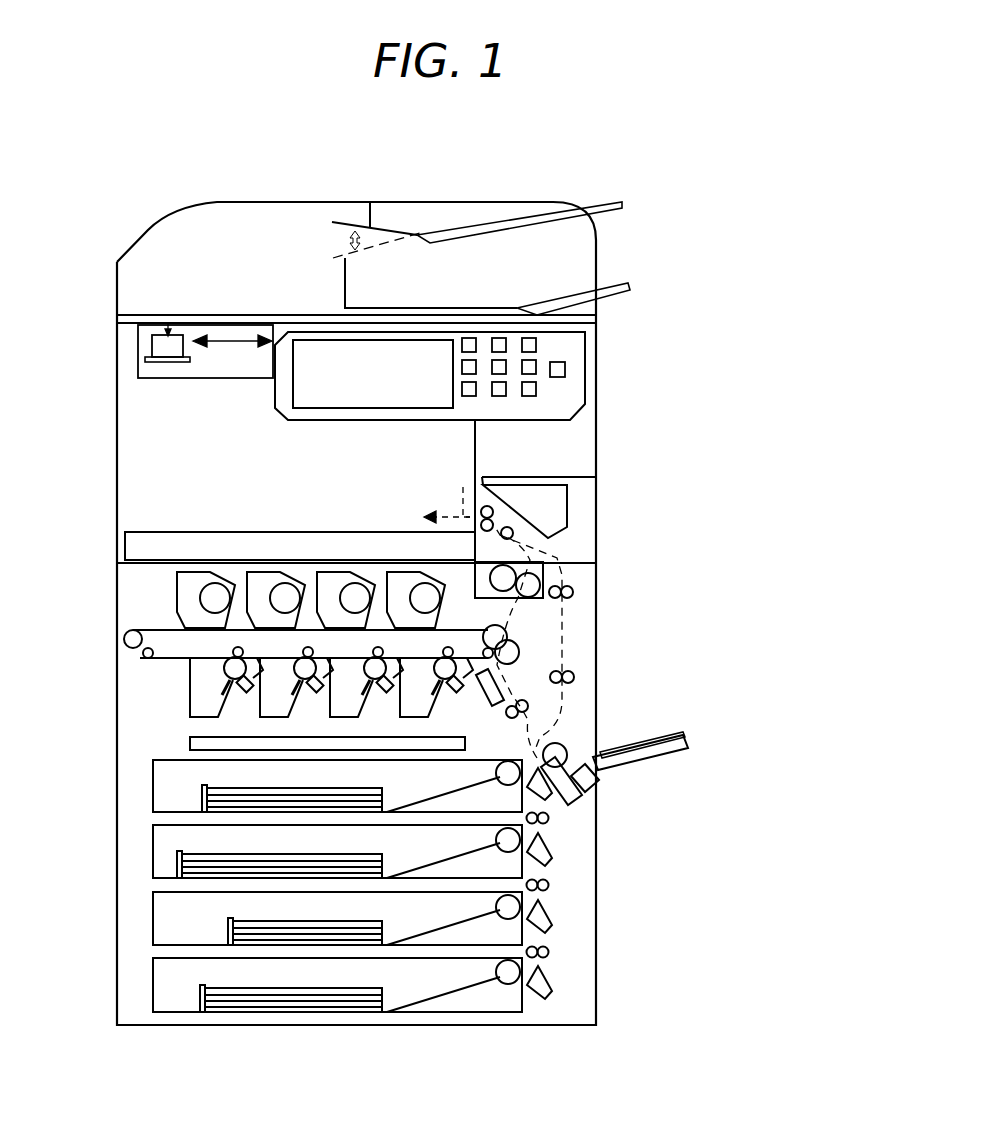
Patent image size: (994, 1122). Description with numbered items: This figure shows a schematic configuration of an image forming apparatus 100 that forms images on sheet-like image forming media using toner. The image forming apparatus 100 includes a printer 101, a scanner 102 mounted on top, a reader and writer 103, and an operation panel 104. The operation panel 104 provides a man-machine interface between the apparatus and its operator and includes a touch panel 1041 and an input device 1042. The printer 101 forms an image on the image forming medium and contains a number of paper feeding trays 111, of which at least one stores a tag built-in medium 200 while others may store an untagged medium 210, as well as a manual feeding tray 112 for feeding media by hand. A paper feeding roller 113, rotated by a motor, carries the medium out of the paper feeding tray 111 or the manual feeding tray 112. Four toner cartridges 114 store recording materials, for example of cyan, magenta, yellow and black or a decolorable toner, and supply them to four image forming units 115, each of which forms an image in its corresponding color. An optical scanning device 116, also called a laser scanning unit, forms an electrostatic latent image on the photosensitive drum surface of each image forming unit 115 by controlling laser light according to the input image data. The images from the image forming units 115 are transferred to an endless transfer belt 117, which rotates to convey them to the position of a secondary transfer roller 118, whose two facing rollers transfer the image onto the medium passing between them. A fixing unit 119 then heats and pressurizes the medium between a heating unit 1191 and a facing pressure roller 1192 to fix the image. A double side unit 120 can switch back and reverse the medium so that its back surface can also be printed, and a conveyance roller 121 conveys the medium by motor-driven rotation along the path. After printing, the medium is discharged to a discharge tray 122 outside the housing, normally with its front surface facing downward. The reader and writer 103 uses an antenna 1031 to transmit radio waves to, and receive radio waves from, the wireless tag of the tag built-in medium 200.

The image forming apparatus 100 is at (622, 163).
The printer 101 is at (728, 648).
The scanner 102 is at (119, 226).
The reader and writer 103 is at (507, 697).
The antenna 1031 is at (505, 685).
The operation panel 104 is at (573, 410).
The touch panel 1041 is at (448, 397).
The input device 1042 is at (543, 353).
The paper feeding tray 111 is at (530, 807).
The manual feeding tray 112 is at (620, 768).
The paper feeding roller 113 is at (505, 785).
The toner cartridge 114 is at (405, 620).
The image forming unit 115 is at (405, 695).
The optical scanning device 116 is at (190, 745).
The transfer belt 117 is at (488, 618).
The secondary transfer roller 118 is at (500, 641).
The fixing unit 119 is at (475, 560).
The heating unit 1191 is at (520, 567).
The pressure roller 1192 is at (545, 575).
The double side unit 120 is at (573, 657).
The conveyance roller 121 is at (400, 553).
The discharge tray 122 is at (495, 508).
The tag built-in medium 200 is at (205, 795).
The untagged medium 210 is at (233, 925).